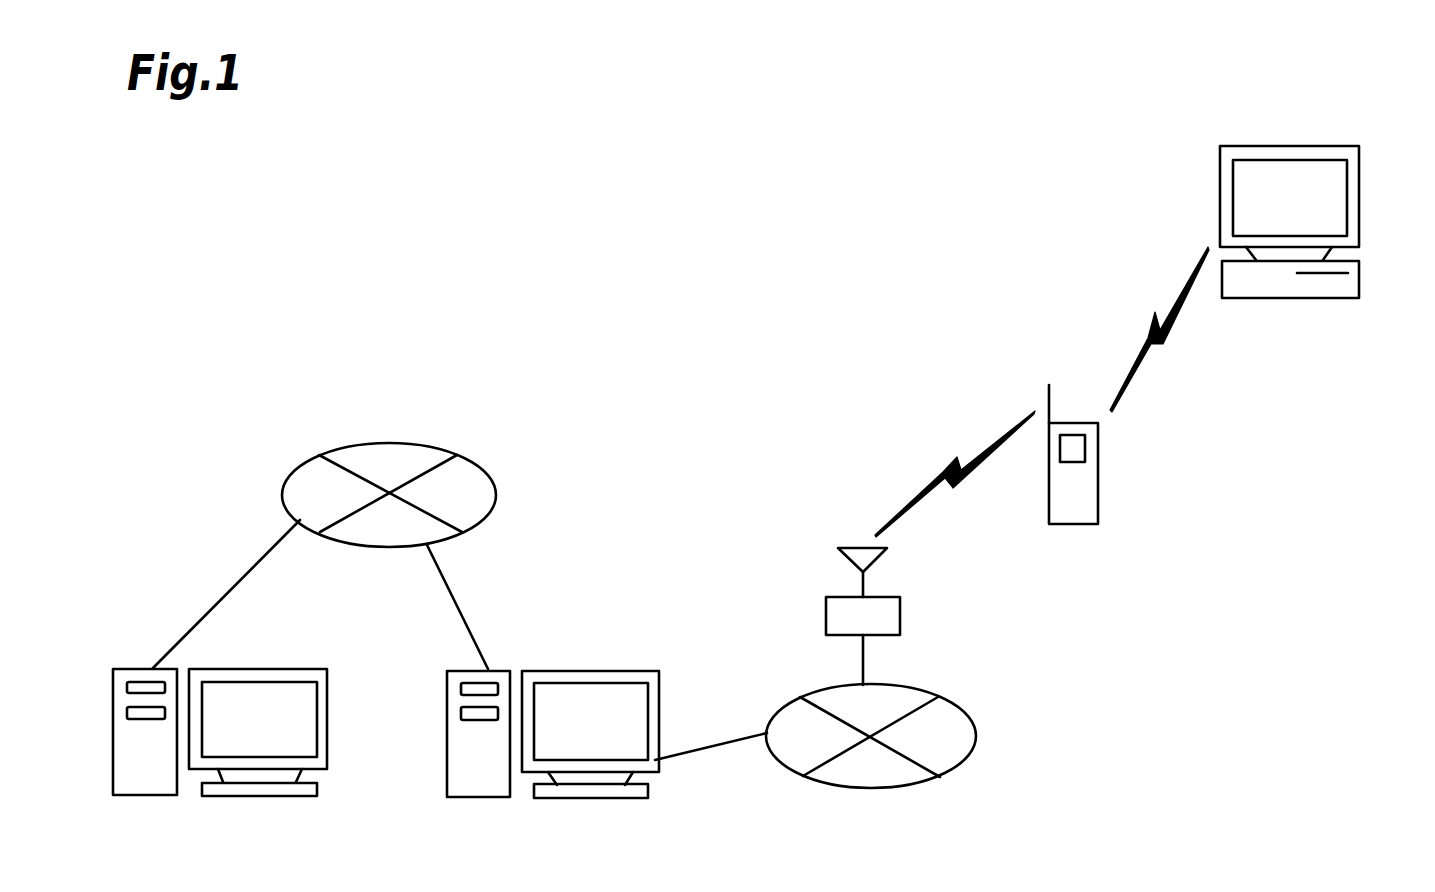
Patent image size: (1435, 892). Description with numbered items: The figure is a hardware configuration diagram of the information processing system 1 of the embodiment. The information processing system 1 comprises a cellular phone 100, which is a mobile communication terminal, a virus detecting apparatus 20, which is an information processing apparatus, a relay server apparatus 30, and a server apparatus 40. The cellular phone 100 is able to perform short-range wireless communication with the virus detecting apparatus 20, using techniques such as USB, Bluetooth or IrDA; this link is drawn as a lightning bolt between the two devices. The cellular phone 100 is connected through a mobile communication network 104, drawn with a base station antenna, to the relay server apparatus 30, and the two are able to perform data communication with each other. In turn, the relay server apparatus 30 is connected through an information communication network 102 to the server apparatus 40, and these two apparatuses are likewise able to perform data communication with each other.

The information processing system 1 is at (455, 288).
The information communication network 102 is at (367, 443).
The server apparatus 40 is at (330, 697).
The relay server apparatus 30 is at (659, 698).
The mobile communication network 104 is at (977, 736).
The cellular phone 100 is at (1098, 477).
The virus detecting apparatus 20 is at (1360, 172).